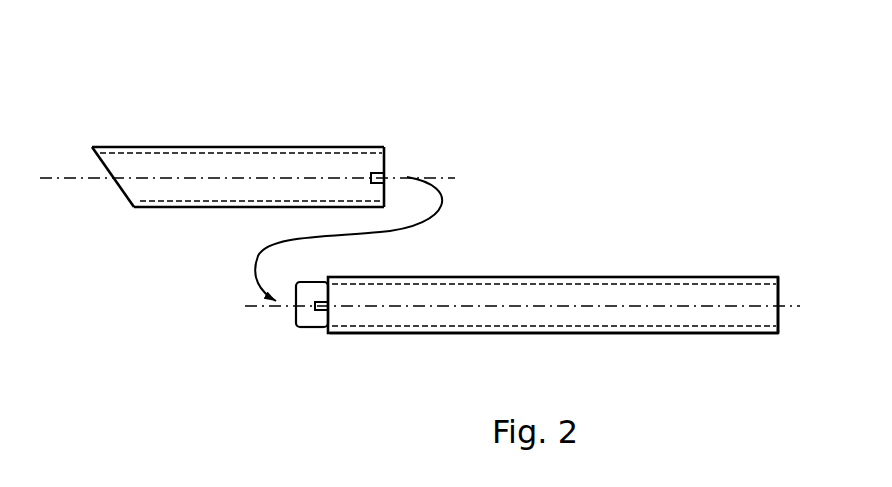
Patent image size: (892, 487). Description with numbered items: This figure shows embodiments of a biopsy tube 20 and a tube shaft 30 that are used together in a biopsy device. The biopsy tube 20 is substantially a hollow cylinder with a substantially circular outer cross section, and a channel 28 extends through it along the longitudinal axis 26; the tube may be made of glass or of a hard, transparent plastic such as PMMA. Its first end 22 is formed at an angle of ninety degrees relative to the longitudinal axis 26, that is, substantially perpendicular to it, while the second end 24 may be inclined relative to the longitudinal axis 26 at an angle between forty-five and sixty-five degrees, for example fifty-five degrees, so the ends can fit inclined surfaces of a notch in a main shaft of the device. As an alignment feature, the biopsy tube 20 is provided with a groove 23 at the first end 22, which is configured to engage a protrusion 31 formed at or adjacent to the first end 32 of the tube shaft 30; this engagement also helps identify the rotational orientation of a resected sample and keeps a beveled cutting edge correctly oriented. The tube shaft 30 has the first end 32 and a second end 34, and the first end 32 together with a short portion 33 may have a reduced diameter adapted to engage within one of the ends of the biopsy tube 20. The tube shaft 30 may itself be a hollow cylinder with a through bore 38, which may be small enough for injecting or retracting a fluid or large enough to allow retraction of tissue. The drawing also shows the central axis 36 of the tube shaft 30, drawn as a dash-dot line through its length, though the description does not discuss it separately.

The biopsy tube 20 is at (235, 97).
The first end 22 is at (389, 150).
The groove 23 is at (372, 172).
The second end 24 is at (90, 146).
The longitudinal axis 26 is at (68, 181).
The channel 28 is at (273, 196).
The tube shaft 30 is at (620, 223).
The protrusion 31 is at (312, 313).
The first end 32 is at (294, 335).
The short portion 33 is at (323, 336).
The second end 34 is at (786, 278).
The longitudinal axis 36 is at (540, 310).
The through bore 38 is at (718, 323).